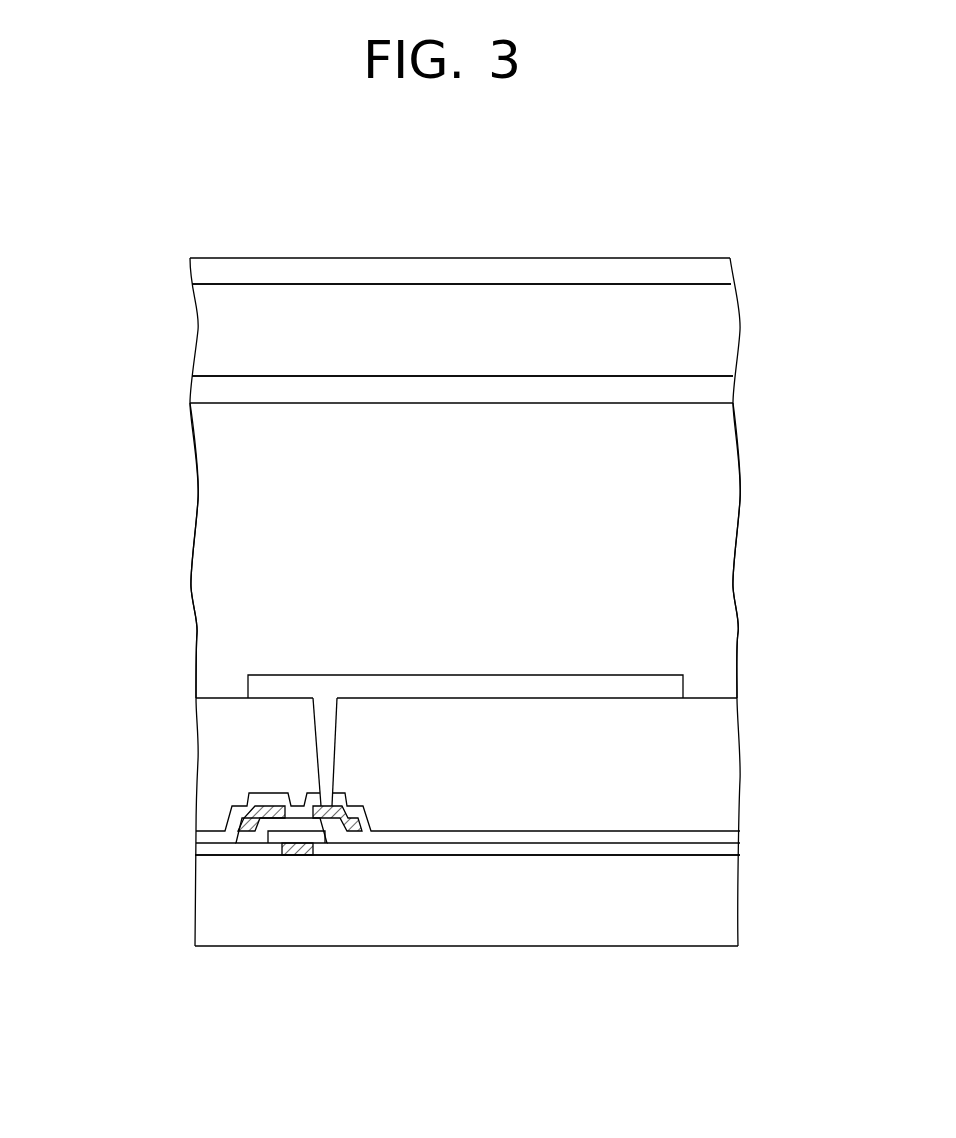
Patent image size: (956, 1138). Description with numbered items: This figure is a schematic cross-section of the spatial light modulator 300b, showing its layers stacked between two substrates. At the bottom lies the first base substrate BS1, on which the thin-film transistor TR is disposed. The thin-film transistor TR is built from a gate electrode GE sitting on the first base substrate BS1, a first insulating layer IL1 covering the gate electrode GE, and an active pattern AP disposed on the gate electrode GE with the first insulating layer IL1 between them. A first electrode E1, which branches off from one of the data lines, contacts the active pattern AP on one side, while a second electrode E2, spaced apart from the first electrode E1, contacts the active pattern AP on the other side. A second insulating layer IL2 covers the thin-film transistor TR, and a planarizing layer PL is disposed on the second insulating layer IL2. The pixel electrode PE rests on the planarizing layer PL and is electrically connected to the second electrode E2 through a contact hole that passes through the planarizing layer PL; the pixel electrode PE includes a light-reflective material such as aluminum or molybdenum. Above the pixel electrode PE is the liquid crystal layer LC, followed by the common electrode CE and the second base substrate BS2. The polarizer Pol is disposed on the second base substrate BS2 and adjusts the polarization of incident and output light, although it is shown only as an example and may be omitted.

The spatial light modulator 300b is at (647, 215).
The polarizer Pol is at (205, 273).
The second base substrate BS2 is at (208, 331).
The common electrode CE is at (208, 389).
The liquid crystal layer LC is at (215, 540).
The pixel electrode PE is at (258, 686).
The planarizing layer PL is at (208, 766).
The second insulating layer IL2 is at (208, 834).
The first insulating layer IL1 is at (208, 852).
The first base substrate BS1 is at (208, 900).
The thin-film transistor TR is at (309, 934).
The first electrode E1 is at (242, 832).
The gate electrode GE is at (292, 856).
The second electrode E2 is at (320, 819).
The active pattern AP is at (343, 836).